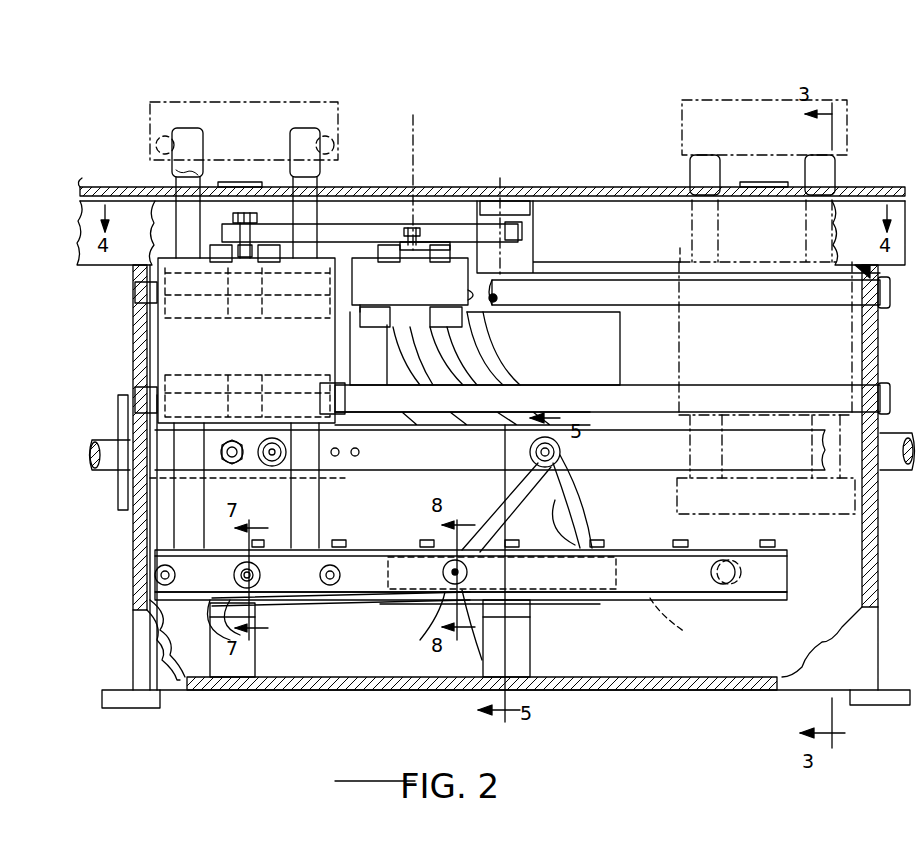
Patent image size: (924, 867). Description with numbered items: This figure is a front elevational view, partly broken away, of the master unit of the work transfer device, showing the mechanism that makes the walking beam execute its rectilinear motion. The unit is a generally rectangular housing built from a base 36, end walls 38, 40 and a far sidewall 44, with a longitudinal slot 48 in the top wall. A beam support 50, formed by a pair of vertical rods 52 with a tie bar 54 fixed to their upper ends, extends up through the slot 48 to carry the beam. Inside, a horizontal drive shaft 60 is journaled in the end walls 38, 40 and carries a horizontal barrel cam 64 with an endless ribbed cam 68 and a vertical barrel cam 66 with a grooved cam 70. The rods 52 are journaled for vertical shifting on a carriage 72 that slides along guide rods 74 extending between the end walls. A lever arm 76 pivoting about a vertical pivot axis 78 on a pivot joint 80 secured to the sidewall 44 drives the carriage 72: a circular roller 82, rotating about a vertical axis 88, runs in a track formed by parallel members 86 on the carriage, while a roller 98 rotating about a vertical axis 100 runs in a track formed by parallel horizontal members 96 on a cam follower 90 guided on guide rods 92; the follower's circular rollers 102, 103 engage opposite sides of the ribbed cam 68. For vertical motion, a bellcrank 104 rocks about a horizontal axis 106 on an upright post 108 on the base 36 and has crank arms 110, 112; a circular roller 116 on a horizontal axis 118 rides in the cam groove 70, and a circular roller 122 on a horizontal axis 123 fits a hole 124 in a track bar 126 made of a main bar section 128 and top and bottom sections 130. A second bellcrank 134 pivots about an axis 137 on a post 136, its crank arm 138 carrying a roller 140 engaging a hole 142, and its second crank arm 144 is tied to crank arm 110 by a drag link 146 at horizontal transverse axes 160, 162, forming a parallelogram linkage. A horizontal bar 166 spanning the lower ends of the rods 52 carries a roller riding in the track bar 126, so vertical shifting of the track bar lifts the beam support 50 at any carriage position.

The base 36 is at (285, 693).
The end wall 38 is at (142, 590).
The end wall 40 is at (876, 545).
The sidewall 44 is at (660, 672).
The longitudinal slot 48 is at (372, 190).
The beam support 50 is at (340, 150).
The vertical rods 52 is at (185, 150).
The tie bar 54 is at (243, 102).
The drive shaft 60 is at (645, 430).
The barrel cam 64 is at (485, 348).
The barrel cam 66 is at (158, 507).
The ribbed cam 68 is at (440, 358).
The grooved cam 70 is at (190, 437).
The carriage 72 is at (680, 247).
The guide rods 74 is at (108, 352).
The lever arm 76 is at (440, 235).
The vertical pivot axis 78 is at (510, 232).
The pivot joint 80 is at (523, 232).
The circular roller 82 is at (246, 262).
The parallel members 86 is at (222, 262).
The vertical axis 88 is at (270, 255).
The cam follower 90 is at (412, 285).
The guide rods 92 is at (568, 272).
The parallel horizontal members 96 is at (380, 250).
The roller 98 is at (408, 240).
The vertical axis 100 is at (415, 160).
The circular roller 102 is at (375, 328).
The circular roller 103 is at (498, 298).
The bellcrank 104 is at (272, 605).
The horizontal axis 106 is at (218, 610).
The upright post 108 is at (258, 652).
The crank arm 110 is at (247, 485).
The crank arm 112 is at (372, 605).
The circular roller 116 is at (118, 485).
The horizontal axis 118 is at (258, 440).
The circular roller 122 is at (458, 590).
The horizontal axis 123 is at (443, 572).
The hole 124 is at (433, 596).
The track bar 126 is at (790, 604).
The main bar section 128 is at (790, 572).
The top and bottom sections 130 is at (788, 550).
The second bellcrank 134 is at (552, 608).
The post 136 is at (530, 652).
The axis 137 is at (510, 572).
The crank arm 138 is at (688, 621).
The roller 140 is at (718, 560).
The hole 142 is at (728, 560).
The second crank arm 144 is at (585, 478).
The drag link 146 is at (497, 445).
The horizontal transverse axis 160 is at (530, 452).
The horizontal transverse axis 162 is at (342, 410).
The horizontal bar 166 is at (168, 620).